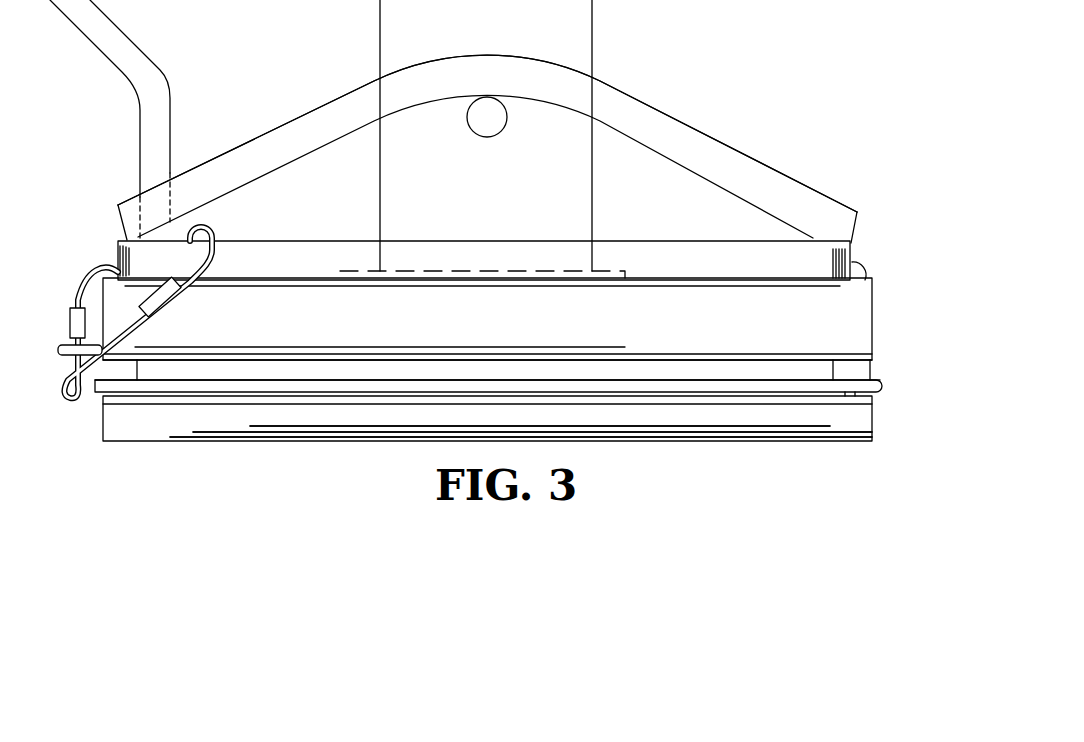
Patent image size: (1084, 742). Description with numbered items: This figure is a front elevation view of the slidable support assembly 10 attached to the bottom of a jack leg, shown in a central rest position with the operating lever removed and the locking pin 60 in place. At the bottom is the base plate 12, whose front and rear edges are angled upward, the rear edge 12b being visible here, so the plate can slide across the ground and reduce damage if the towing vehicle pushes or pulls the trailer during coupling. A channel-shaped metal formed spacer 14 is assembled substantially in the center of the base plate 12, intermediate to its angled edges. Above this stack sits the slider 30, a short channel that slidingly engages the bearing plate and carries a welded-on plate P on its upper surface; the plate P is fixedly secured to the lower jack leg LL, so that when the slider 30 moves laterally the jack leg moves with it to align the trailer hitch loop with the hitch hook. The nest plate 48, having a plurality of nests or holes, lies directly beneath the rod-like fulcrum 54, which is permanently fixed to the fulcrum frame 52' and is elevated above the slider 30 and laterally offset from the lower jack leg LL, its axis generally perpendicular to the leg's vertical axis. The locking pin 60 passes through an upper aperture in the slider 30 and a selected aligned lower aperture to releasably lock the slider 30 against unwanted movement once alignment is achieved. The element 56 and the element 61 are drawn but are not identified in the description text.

The slidable support assembly 10 is at (700, 118).
The base plate 12 is at (324, 440).
The rear edge 12b is at (730, 412).
The spacer 14 is at (731, 370).
The slider 30 is at (487, 332).
The nest plate 48 is at (882, 385).
The fulcrum frame 52' is at (487, 149).
The fulcrum 54 is at (504, 127).
The mounting plate 56 is at (703, 252).
The locking pin 60 is at (150, 70).
The hose 61 is at (147, 330).
The plate P is at (614, 271).
The lower jack leg LL is at (578, 63).